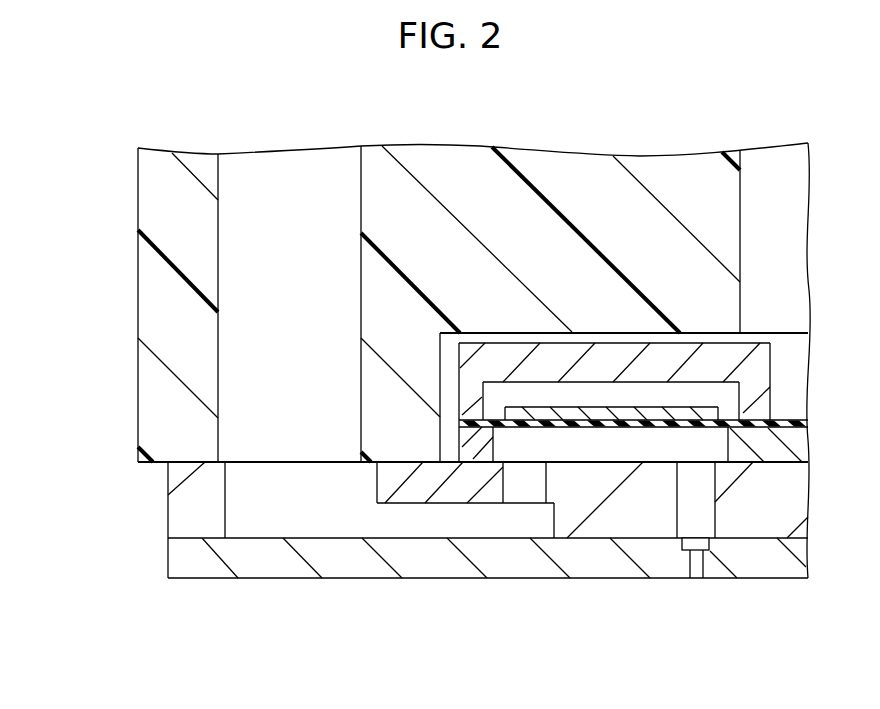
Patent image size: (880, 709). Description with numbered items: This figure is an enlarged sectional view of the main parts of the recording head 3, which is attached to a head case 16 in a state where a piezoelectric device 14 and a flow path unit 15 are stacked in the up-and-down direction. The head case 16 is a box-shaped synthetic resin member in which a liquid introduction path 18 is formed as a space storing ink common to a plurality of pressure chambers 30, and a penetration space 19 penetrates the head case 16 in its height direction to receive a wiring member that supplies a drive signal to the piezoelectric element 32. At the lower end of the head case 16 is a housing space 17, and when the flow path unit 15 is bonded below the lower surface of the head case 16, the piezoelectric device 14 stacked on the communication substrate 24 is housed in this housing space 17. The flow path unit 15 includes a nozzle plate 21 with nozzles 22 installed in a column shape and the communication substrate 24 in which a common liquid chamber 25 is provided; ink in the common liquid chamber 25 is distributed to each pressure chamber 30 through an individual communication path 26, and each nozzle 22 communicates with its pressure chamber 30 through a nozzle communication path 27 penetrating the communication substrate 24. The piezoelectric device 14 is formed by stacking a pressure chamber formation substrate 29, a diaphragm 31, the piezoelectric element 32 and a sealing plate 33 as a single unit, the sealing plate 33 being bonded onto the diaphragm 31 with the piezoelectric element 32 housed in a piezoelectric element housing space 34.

The recording head 3 is at (112, 100).
The piezoelectric device 14 is at (447, 88).
The flow path unit 15 is at (156, 595).
The head case 16 is at (153, 193).
The housing space 17 is at (688, 352).
The liquid introduction path 18 is at (283, 218).
The penetration space 19 is at (772, 163).
The nozzle plate 21 is at (190, 557).
The nozzle 22 is at (690, 572).
The communication substrate 24 is at (190, 507).
The common liquid chamber 25 is at (330, 517).
The individual communication path 26 is at (503, 483).
The nozzle communication path 27 is at (713, 506).
The pressure chamber formation substrate 29 is at (473, 443).
The pressure chamber 30 is at (579, 452).
The diaphragm 31 is at (513, 420).
The piezoelectric element 32 is at (568, 413).
The sealing plate 33 is at (612, 353).
The piezoelectric element housing space 34 is at (657, 398).